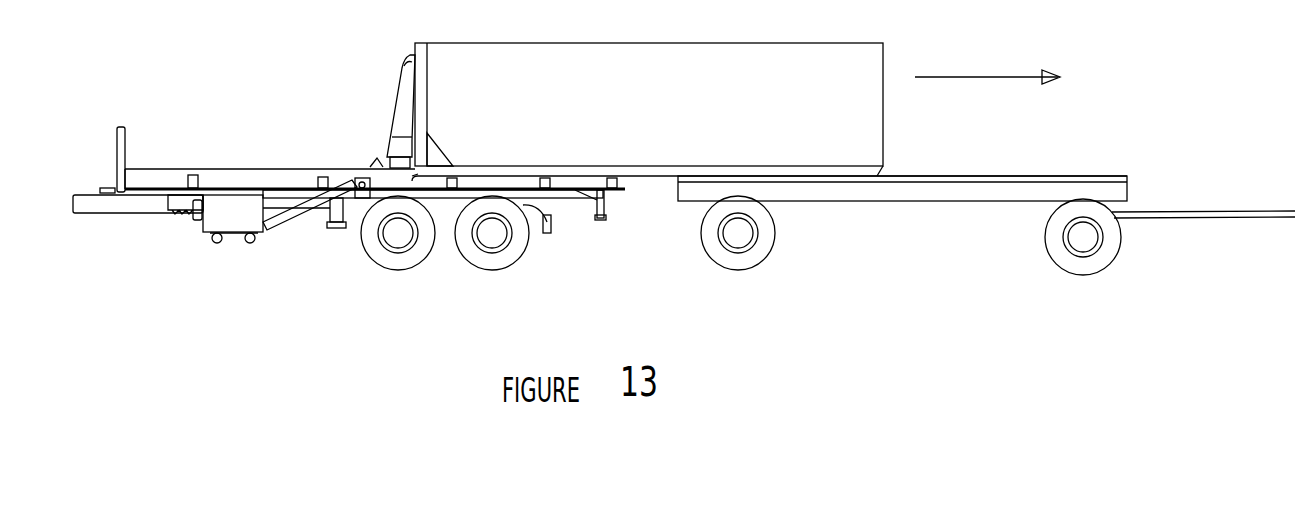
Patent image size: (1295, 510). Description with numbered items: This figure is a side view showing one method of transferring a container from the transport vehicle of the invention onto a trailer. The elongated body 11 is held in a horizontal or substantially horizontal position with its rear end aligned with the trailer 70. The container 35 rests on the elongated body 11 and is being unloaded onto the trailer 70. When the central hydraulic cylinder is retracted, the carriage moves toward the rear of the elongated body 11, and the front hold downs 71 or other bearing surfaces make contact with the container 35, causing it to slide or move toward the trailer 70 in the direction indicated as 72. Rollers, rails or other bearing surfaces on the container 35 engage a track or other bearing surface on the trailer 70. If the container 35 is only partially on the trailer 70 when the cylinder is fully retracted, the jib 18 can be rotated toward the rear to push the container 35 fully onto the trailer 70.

The elongated body 11 is at (248, 178).
The jib 18 is at (400, 103).
The front hold downs 71 is at (397, 163).
The container 35 is at (622, 115).
The trailer 70 is at (948, 197).
The direction 72 is at (990, 53).